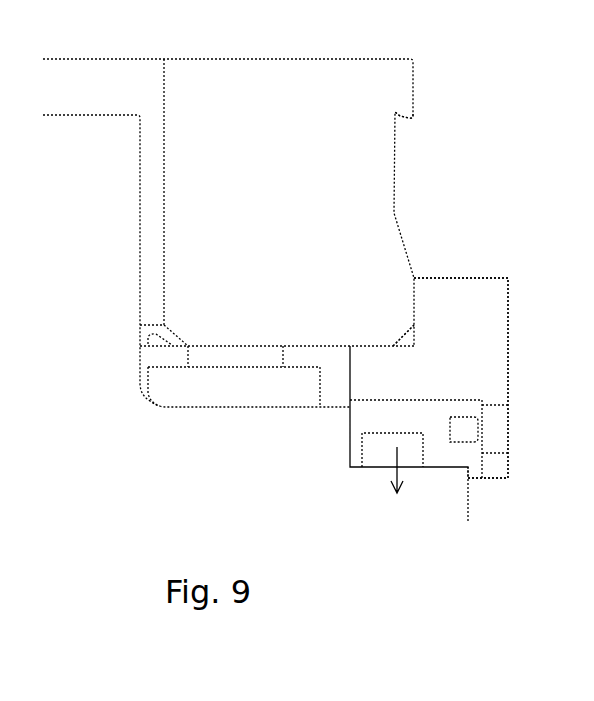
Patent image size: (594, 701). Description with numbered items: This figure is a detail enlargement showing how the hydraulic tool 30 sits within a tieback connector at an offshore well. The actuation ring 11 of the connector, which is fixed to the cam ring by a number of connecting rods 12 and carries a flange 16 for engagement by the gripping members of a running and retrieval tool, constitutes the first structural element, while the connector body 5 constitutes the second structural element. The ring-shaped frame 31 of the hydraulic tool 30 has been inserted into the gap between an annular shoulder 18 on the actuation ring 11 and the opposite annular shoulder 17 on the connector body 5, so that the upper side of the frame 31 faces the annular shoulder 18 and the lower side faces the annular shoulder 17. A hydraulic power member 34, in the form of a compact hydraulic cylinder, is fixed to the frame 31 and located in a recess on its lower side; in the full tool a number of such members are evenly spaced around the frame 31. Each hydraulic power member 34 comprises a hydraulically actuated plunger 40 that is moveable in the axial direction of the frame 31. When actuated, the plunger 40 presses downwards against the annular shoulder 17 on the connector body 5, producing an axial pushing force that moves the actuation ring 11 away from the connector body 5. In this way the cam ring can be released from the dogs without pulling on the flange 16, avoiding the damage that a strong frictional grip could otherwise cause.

The actuation ring 11 is at (378, 180).
The flange 16 is at (404, 126).
The connecting rod 12 is at (223, 360).
The annular shoulder 18 is at (378, 348).
The hydraulic tool 30 is at (508, 256).
The ring-shaped frame 31 is at (493, 326).
The hydraulic power member 34 is at (434, 410).
The hydraulically actuated plunger 40 is at (366, 450).
The annular shoulder 17 is at (382, 463).
The connector body 5 is at (457, 507).